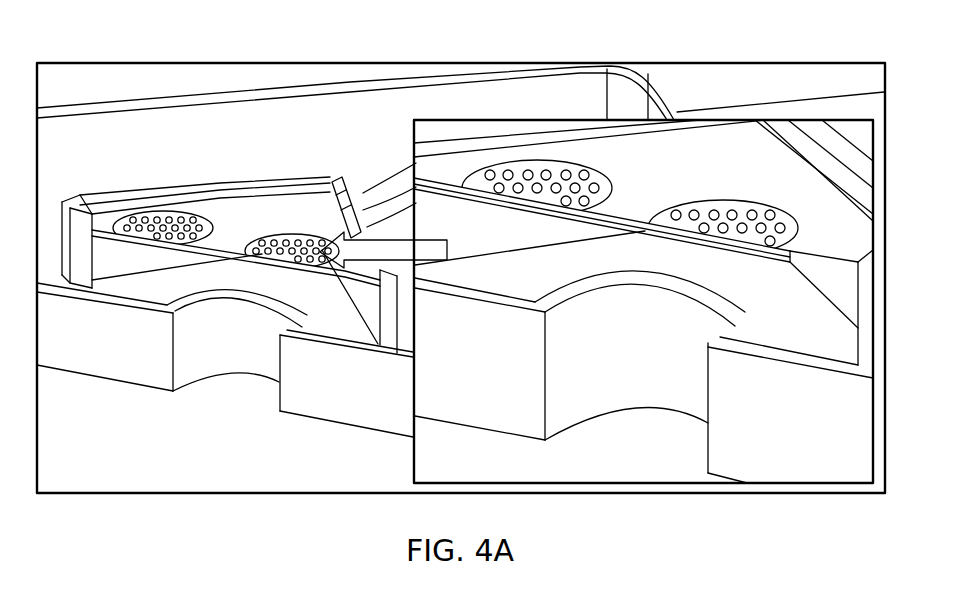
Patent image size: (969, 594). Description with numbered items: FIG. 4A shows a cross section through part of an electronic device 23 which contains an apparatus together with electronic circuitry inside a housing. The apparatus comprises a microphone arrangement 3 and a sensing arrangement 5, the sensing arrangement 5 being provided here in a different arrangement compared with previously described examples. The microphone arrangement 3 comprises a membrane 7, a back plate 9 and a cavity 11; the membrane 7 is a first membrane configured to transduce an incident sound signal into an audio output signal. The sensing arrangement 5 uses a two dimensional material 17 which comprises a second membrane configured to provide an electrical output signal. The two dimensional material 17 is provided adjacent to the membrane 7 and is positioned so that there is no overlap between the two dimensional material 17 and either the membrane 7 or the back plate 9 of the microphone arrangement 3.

The electronic device 23 is at (545, 70).
The microphone arrangement 3 is at (298, 202).
The cavity 11 is at (155, 288).
The sensing arrangement 5 is at (506, 214).
The membrane 7 is at (700, 254).
The two dimensional material 17 is at (628, 214).
The back plate 9 is at (786, 213).